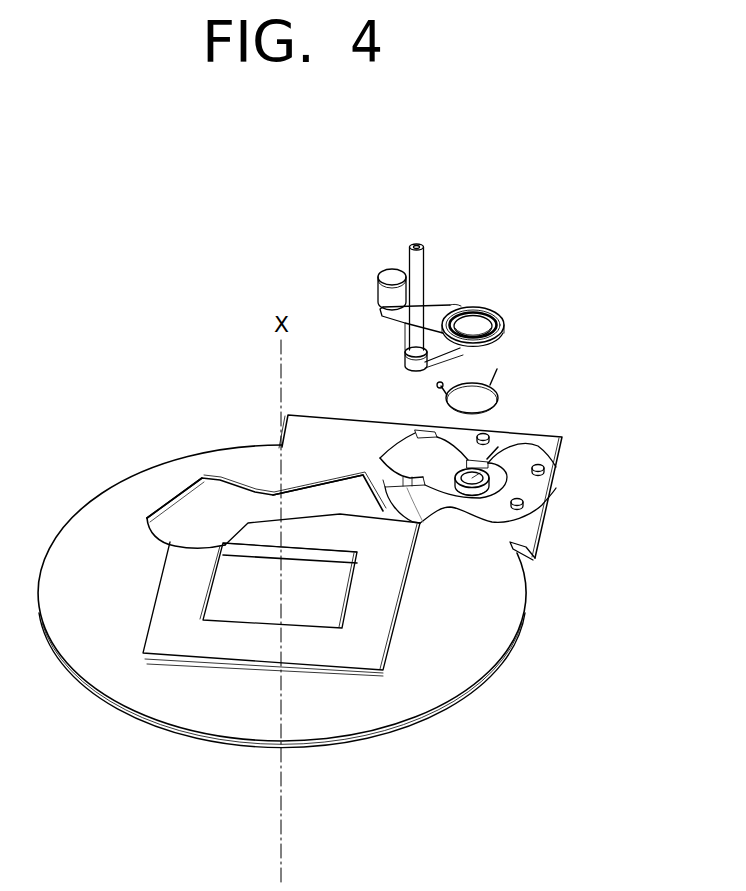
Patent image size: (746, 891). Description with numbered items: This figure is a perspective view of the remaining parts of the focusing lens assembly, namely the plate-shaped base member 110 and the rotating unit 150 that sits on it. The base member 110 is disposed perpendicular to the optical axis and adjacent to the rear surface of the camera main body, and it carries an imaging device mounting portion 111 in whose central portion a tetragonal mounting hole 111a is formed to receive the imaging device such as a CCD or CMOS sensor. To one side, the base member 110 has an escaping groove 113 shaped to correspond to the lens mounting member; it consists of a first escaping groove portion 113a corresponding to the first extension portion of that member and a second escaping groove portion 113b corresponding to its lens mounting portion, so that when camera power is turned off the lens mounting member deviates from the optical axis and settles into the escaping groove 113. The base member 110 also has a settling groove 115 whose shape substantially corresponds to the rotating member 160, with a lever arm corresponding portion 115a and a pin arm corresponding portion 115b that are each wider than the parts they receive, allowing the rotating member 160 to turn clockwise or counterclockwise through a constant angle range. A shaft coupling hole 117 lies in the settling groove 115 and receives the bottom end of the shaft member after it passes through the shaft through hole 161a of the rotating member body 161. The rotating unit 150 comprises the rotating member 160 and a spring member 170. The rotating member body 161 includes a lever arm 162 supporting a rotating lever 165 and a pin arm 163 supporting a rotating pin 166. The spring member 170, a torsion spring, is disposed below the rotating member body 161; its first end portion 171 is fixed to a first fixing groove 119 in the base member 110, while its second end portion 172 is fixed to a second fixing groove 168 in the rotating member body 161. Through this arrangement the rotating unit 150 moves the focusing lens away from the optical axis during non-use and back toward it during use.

The base member 110 is at (433, 675).
The imaging device mounting portion 111 is at (360, 655).
The tetragonal mounting hole 111a is at (262, 617).
The escaping groove 113 is at (212, 393).
The first escaping groove portion 113a is at (278, 502).
The second escaping groove portion 113b is at (187, 517).
The settling groove 115 is at (538, 517).
The lever arm corresponding portion 115a is at (380, 458).
The pin arm corresponding portion 115b is at (440, 493).
The shaft coupling hole 117 is at (490, 481).
The first fixing groove 119 is at (553, 467).
The rotating unit 150 is at (619, 382).
The rotating member 160 is at (510, 327).
The rotating member body 161 is at (504, 321).
The shaft through hole 161a is at (478, 325).
The lever arm 162 is at (432, 305).
The pin arm 163 is at (440, 340).
The rotating lever 165 is at (392, 277).
The rotating pin 166 is at (417, 245).
The second fixing groove 168 is at (449, 305).
The spring member 170 is at (503, 393).
The first end portion 171 is at (497, 369).
The second end portion 172 is at (440, 388).